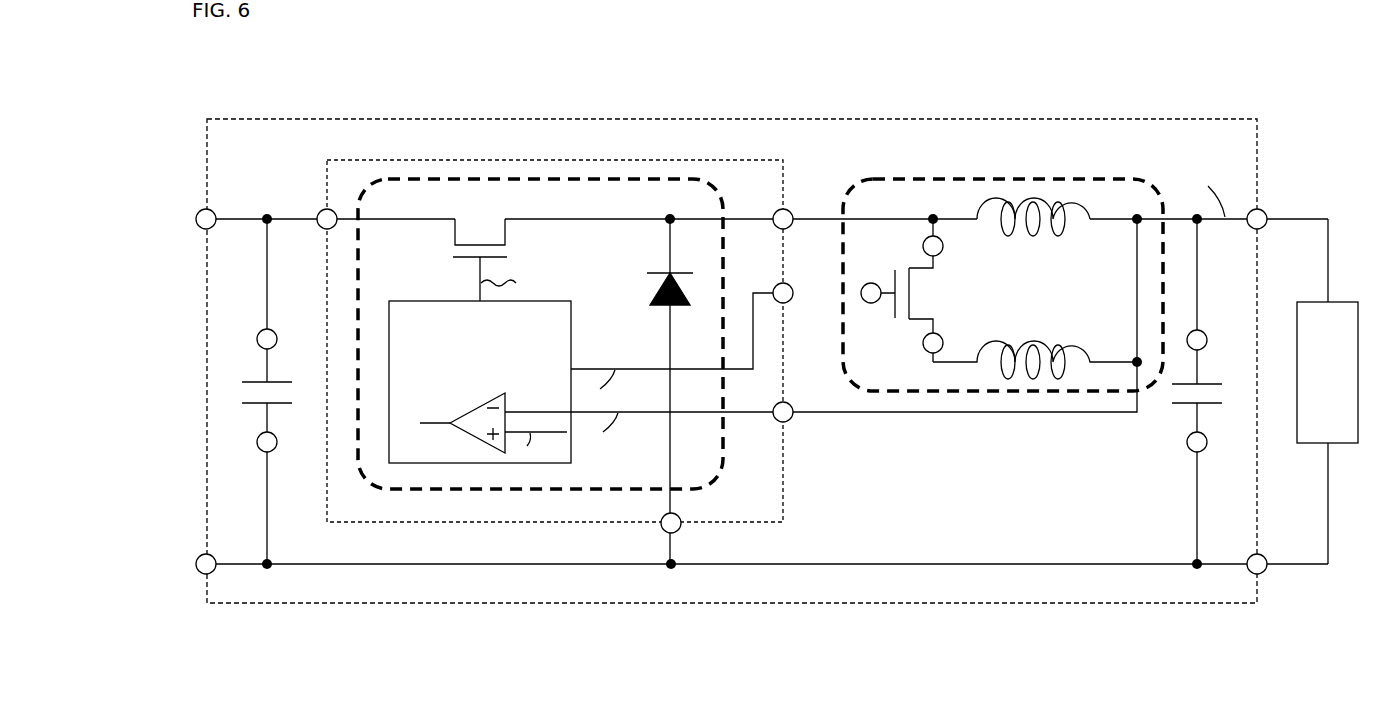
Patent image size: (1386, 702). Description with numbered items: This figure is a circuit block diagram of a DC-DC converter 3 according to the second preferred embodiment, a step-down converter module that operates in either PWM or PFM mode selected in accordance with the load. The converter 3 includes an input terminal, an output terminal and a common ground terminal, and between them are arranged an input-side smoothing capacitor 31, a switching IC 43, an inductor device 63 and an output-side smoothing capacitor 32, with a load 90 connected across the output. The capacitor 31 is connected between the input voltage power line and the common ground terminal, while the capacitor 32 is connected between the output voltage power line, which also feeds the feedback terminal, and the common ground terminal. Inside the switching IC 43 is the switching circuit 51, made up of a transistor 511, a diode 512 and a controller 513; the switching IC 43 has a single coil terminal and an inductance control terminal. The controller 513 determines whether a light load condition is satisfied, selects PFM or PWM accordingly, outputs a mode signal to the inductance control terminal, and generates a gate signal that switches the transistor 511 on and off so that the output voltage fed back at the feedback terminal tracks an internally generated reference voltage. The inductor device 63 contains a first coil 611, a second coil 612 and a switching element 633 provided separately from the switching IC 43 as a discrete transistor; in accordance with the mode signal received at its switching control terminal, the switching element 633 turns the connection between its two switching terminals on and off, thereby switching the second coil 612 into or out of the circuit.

The DC-DC converter 3 is at (1000, 119).
The input-side smoothing capacitor 31 is at (245, 404).
The output-side smoothing capacitor 32 is at (1172, 404).
The switching IC 43 is at (495, 523).
The switching circuit 51 is at (588, 179).
The transistor 511 is at (481, 244).
The diode 512 is at (658, 273).
The controller 513 is at (572, 342).
The inductor device 63 is at (1103, 179).
The first coil 611 is at (1115, 205).
The second coil 612 is at (1115, 347).
The switching element 633 is at (915, 322).
The load 90 is at (1335, 302).